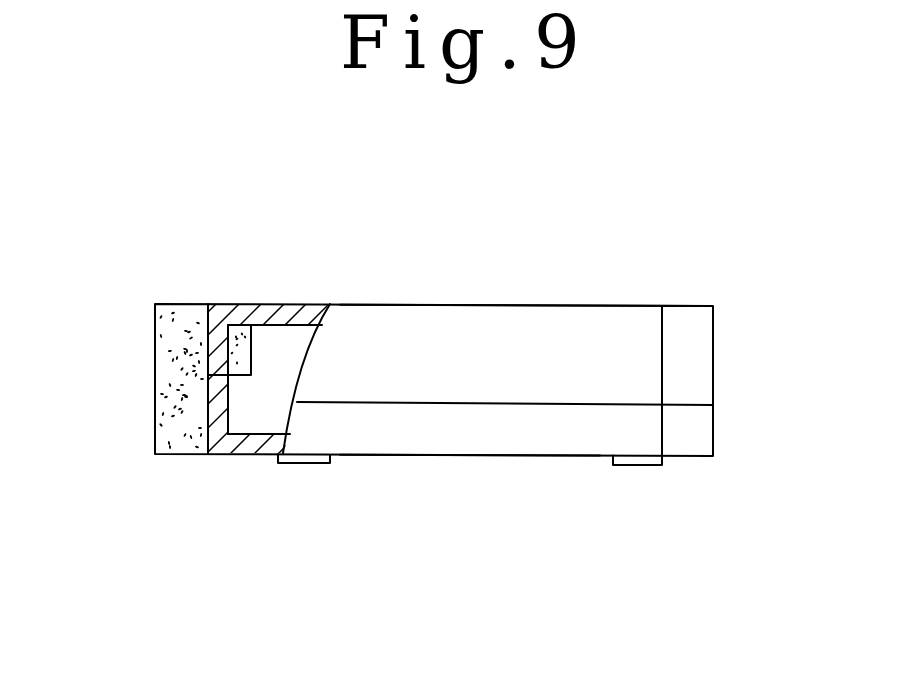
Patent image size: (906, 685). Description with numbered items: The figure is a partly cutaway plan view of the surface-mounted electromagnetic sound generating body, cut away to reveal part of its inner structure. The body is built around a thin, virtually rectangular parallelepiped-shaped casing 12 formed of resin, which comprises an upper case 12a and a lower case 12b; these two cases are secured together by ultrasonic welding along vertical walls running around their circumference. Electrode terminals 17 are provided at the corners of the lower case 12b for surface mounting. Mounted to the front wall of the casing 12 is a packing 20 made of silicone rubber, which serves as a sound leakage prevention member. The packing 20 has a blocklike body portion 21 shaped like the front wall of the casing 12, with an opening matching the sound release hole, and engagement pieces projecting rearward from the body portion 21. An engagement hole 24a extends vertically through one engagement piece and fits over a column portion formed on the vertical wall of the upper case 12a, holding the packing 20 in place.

The casing 12 is at (577, 305).
The upper case 12a is at (442, 305).
The lower case 12b is at (462, 457).
The electrode terminals 17 is at (303, 463).
The packing 20 is at (154, 343).
The body portion 21 is at (155, 412).
The engagement hole 24a is at (251, 351).